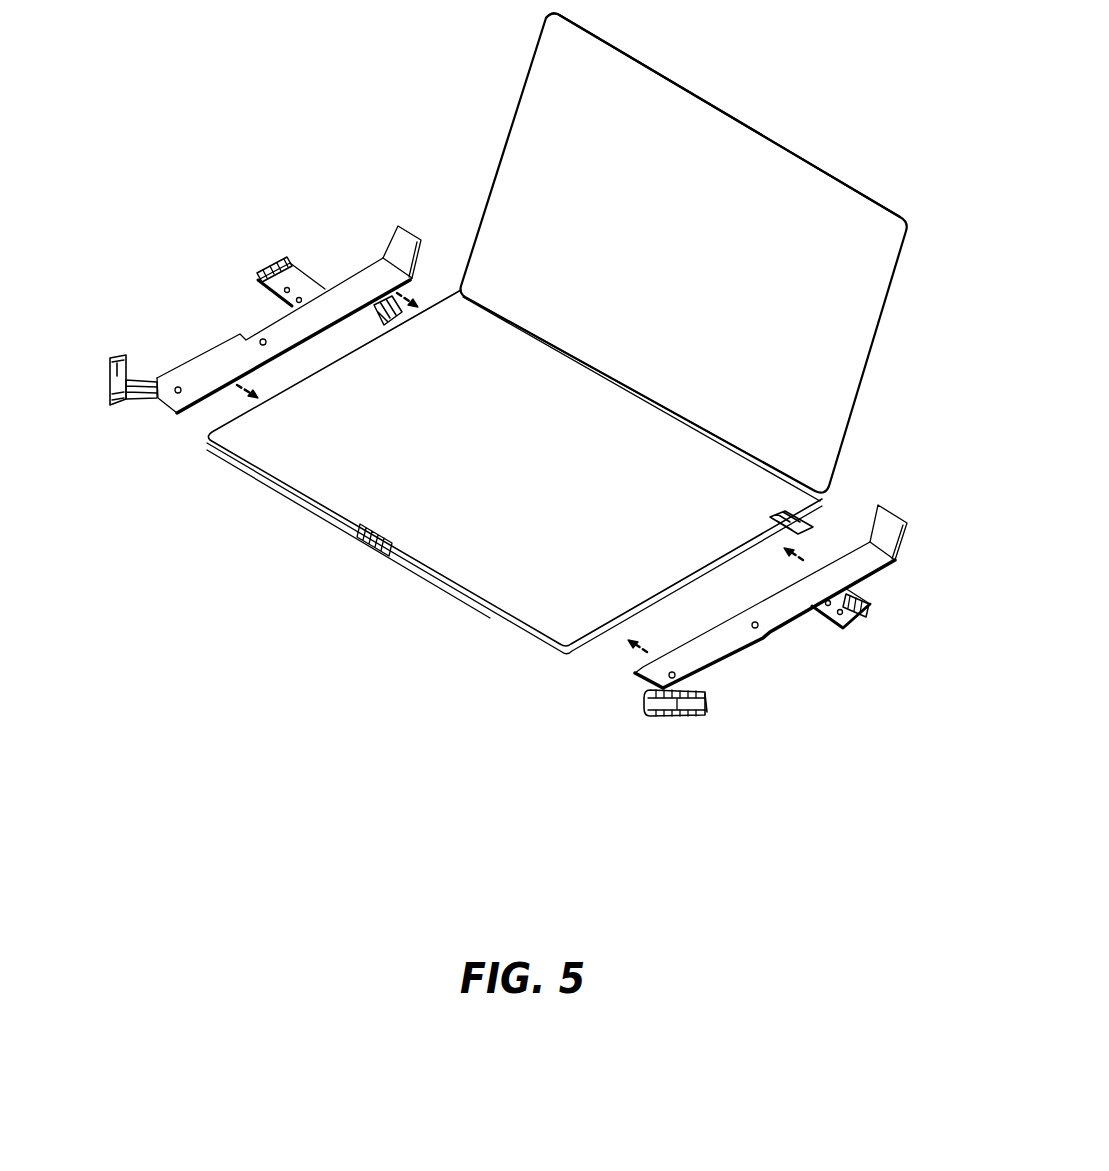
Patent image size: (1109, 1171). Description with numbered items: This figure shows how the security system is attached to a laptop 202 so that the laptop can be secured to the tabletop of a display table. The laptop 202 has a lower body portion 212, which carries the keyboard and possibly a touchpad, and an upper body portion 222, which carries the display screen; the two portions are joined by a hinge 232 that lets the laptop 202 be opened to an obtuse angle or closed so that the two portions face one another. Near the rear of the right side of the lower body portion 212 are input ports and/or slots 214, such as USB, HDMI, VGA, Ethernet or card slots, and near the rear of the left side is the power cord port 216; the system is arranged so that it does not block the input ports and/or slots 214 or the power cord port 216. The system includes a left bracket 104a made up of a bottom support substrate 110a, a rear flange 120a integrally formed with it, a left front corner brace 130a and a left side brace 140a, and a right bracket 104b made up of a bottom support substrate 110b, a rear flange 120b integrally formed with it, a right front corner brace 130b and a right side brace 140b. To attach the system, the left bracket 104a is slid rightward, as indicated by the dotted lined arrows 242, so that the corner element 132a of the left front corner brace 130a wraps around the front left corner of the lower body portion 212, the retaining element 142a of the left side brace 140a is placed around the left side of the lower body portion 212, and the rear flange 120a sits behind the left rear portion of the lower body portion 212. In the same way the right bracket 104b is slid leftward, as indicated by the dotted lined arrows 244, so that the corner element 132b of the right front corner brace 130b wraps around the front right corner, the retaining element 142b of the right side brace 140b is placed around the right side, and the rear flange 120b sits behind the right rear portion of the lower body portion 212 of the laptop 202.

The laptop 202 is at (790, 110).
The upper body portion 222 is at (521, 172).
The hinge 232 is at (732, 440).
The lower body portion 212 is at (512, 492).
The input ports and/or slots 214 is at (815, 527).
The power cord port 216 is at (370, 318).
The left bracket 104a is at (213, 307).
The bottom support substrate 110a is at (327, 293).
The rear flange 120a is at (400, 228).
The left front corner brace 130a is at (103, 377).
The corner element 132a is at (117, 373).
The left side brace 140a is at (250, 281).
The retaining element 142a is at (277, 268).
The dotted lined arrows 242 is at (237, 386).
The right bracket 104b is at (845, 678).
The bottom support substrate 110b is at (803, 617).
The rear flange 120b is at (880, 505).
The right front corner brace 130b is at (680, 730).
The corner element 132b is at (708, 703).
The right side brace 140b is at (880, 606).
The retaining element 142b is at (858, 597).
The dotted lined arrows 244 is at (795, 556).